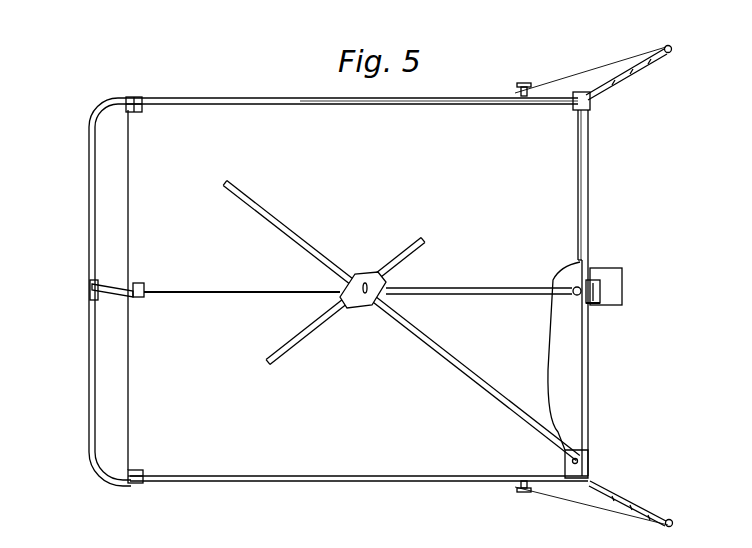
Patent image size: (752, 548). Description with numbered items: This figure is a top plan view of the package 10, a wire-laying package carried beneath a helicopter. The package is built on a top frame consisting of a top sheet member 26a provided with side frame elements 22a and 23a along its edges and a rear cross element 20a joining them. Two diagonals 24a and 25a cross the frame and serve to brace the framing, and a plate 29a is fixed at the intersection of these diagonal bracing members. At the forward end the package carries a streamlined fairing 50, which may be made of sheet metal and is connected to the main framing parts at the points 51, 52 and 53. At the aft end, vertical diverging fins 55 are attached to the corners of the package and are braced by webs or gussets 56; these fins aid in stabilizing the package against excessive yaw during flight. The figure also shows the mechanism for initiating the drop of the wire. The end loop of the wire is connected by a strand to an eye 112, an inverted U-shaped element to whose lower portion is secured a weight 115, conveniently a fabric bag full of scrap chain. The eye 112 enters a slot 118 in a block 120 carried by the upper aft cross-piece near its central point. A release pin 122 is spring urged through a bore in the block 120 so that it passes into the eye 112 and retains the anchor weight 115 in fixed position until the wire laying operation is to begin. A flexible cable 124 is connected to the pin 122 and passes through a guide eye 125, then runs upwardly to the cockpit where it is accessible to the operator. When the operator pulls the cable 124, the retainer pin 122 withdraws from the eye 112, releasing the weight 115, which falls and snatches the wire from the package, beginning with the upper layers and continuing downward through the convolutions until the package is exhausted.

The package 10 is at (219, 96).
The rear cross element 20a is at (127, 328).
The side frame element 22a is at (305, 483).
The side frame element 23a is at (288, 100).
The diagonal 24a is at (302, 338).
The diagonal 25a is at (423, 338).
The top sheet member 26a is at (402, 115).
The plate 29a is at (359, 273).
The streamlined fairing 50 is at (98, 457).
The fairing connection 51 is at (135, 99).
The fairing connection 52 is at (137, 483).
The fairing connection 53 is at (110, 283).
The vertical diverging fin 55 is at (629, 70).
The web or gusset 56 is at (565, 68).
The eye 112 is at (594, 304).
The weight 115 is at (613, 285).
The slot 118 is at (590, 276).
The block 120 is at (597, 308).
The release pin 122 is at (580, 298).
The flexible cable 124 is at (452, 285).
The guide eye 125 is at (367, 296).